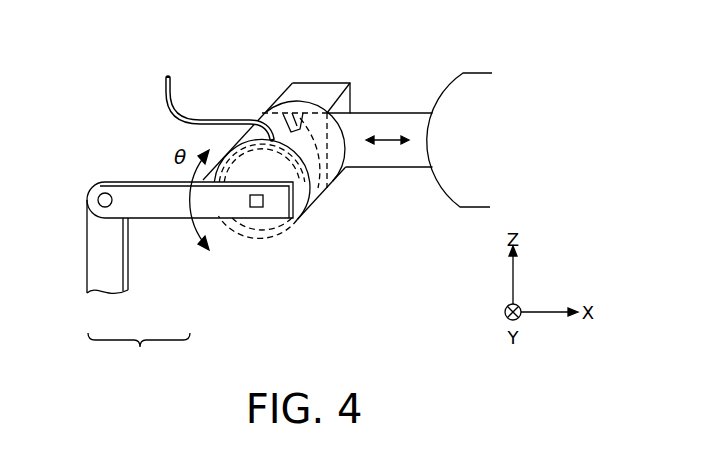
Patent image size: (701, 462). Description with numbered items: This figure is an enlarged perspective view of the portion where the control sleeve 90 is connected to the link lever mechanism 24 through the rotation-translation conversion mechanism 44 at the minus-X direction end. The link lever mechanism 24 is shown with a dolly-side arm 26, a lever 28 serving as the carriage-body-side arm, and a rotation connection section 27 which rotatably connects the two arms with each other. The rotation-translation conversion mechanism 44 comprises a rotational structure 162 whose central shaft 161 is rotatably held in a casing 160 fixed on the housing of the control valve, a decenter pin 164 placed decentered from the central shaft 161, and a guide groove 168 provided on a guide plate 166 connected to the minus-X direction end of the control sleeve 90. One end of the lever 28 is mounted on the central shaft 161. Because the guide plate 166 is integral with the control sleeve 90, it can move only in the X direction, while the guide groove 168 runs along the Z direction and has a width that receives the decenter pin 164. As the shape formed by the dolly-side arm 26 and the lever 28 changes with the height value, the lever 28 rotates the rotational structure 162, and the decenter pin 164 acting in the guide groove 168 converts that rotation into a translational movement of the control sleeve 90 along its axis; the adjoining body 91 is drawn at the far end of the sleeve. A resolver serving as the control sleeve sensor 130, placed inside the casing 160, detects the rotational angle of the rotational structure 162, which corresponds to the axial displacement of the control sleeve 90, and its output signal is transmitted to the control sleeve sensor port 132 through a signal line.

The link lever mechanism 24 is at (139, 355).
The dolly-side arm 26 is at (105, 292).
The rotation connection section 27 is at (106, 193).
The lever 28 is at (160, 210).
The rotation-translation conversion mechanism 44 is at (341, 275).
The control sleeve 90 is at (398, 126).
The drive body 91 is at (476, 88).
The control sleeve sensor 130 is at (336, 178).
The control sleeve sensor port 132 is at (168, 76).
The casing 160 is at (240, 228).
The central shaft 161 is at (258, 208).
The rotational structure 162 is at (257, 232).
The decenter pin 164 is at (282, 112).
The guide plate 166 is at (337, 88).
The guide groove 168 is at (301, 93).